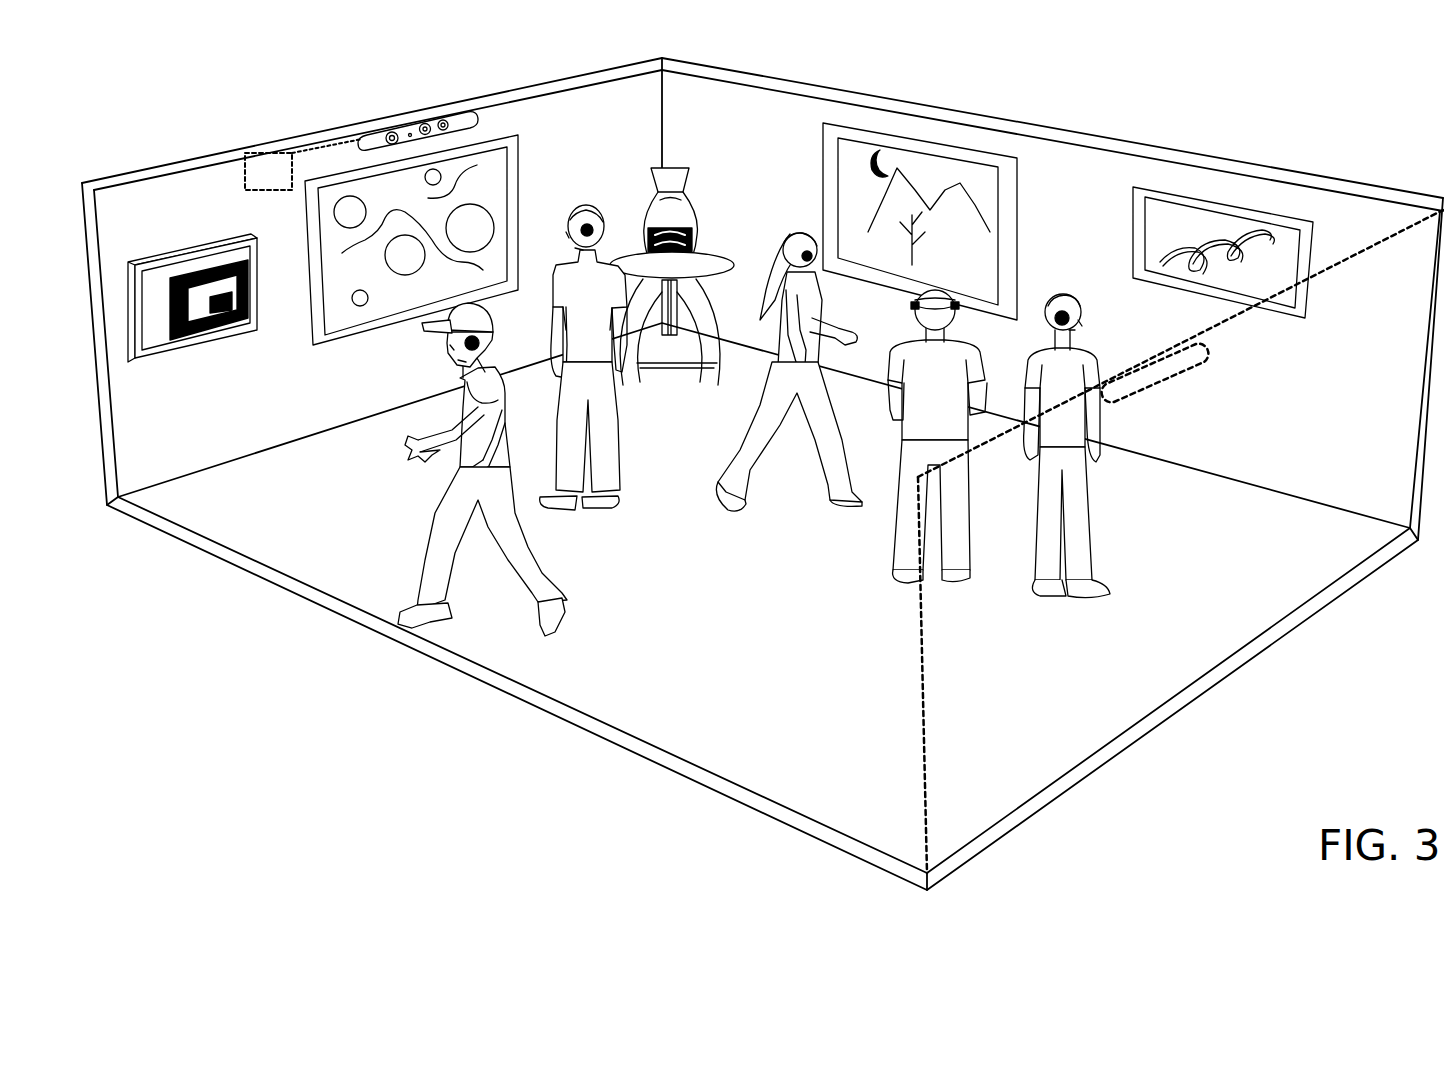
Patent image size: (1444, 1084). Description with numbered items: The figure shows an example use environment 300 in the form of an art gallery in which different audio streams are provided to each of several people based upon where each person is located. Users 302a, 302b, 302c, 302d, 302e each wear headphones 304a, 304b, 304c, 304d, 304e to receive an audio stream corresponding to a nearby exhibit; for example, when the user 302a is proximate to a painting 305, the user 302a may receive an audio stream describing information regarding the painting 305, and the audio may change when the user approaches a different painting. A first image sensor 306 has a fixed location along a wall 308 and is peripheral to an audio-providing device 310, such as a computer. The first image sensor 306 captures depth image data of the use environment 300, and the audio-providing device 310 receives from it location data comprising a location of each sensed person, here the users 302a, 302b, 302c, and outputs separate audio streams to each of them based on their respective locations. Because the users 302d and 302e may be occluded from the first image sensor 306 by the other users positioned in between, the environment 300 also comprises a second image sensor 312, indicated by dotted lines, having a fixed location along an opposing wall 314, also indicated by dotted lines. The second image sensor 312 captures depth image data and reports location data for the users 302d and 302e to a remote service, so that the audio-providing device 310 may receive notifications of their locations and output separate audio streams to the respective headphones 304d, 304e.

The use environment 300 is at (1256, 70).
The user 302a is at (537, 577).
The user 302b is at (570, 391).
The user 302c is at (751, 445).
The user 302d is at (950, 430).
The user 302e is at (1079, 490).
The headphones 304a is at (482, 344).
The headphones 304b is at (578, 212).
The headphones 304c is at (790, 240).
The headphones 304d is at (944, 328).
The headphones 304e is at (1062, 296).
The painting 305 is at (163, 266).
The first image sensor 306 is at (392, 128).
The wall 308 is at (592, 131).
The audio-providing device 310 is at (287, 182).
The second image sensor 312 is at (1211, 355).
The opposing wall 314 is at (924, 682).